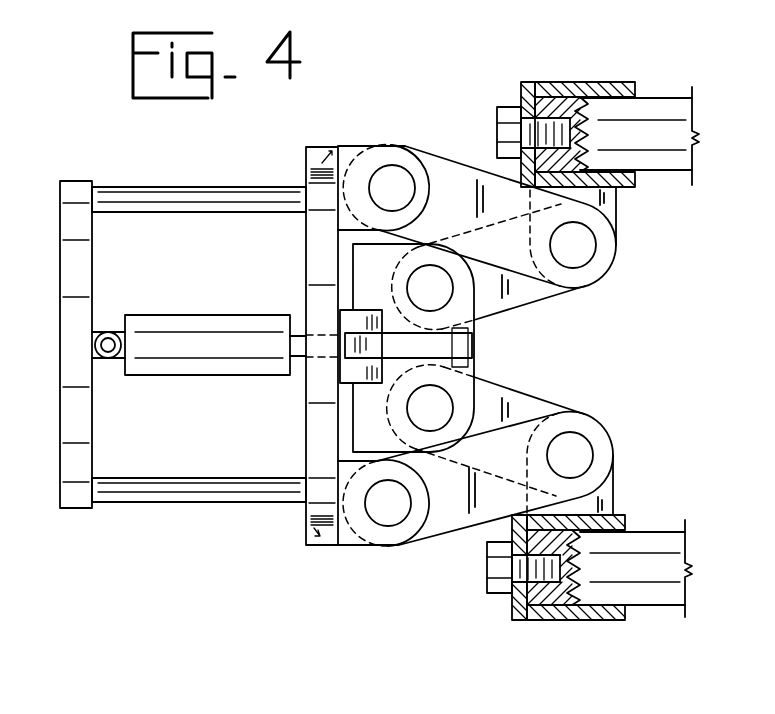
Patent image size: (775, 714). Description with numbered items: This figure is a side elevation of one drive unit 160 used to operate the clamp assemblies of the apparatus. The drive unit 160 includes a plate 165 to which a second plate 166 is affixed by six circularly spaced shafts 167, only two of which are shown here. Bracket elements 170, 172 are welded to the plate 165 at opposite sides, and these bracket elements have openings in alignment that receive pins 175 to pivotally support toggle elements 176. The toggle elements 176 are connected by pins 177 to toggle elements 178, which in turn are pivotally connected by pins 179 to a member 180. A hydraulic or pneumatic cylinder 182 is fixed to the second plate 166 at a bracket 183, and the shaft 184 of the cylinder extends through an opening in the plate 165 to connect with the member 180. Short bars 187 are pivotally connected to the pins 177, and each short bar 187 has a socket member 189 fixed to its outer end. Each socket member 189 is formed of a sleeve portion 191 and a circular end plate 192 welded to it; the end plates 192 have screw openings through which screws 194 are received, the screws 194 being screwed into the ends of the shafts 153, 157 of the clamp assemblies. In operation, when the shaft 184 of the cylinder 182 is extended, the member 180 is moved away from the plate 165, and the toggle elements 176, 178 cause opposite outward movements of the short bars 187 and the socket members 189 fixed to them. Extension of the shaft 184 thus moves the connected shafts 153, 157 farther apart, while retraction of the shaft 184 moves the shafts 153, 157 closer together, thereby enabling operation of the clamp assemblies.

The shaft 153 is at (642, 607).
The shaft 157 is at (670, 98).
The drive unit 160 is at (220, 545).
The plate 165 is at (318, 145).
The second plate 166 is at (80, 177).
The shafts 167 is at (199, 183).
The bracket element 170 is at (353, 146).
The bracket element 172 is at (350, 547).
The pins 175 is at (393, 166).
The toggle elements 176 is at (440, 157).
The pins 177 is at (596, 255).
The toggle elements 178 is at (528, 302).
The pins 179 is at (453, 298).
The member 180 is at (350, 398).
The hydraulic or pneumatic cylinder 182 is at (173, 375).
The bracket 183 is at (98, 330).
The shaft 184 is at (298, 363).
The short bars 187 is at (617, 212).
The socket member 189 is at (580, 82).
The sleeve portion 191 is at (620, 82).
The circular end plate 192 is at (530, 82).
The screws 194 is at (510, 106).